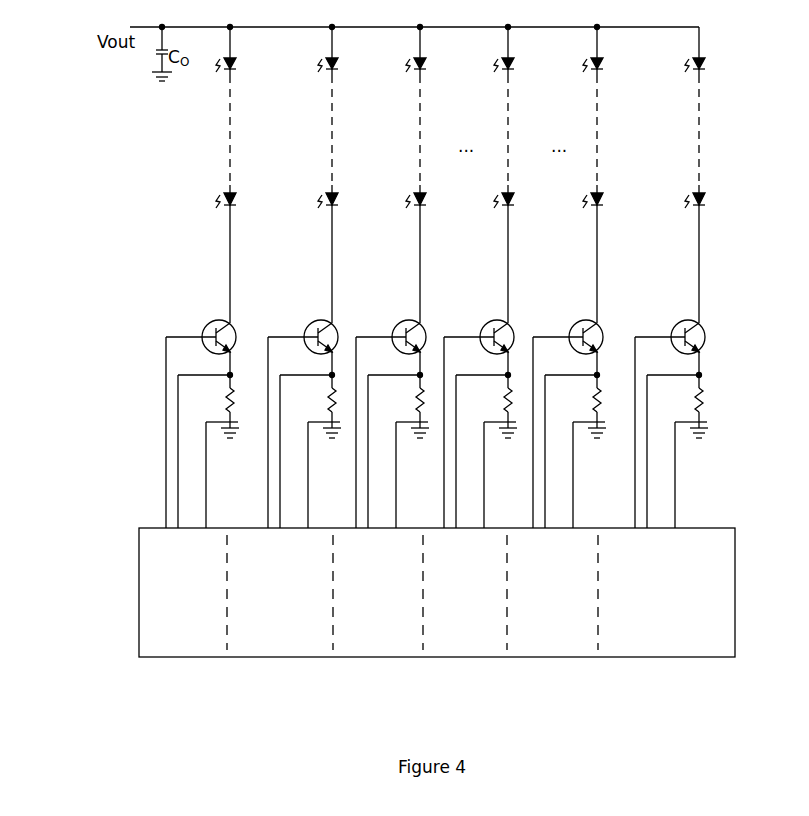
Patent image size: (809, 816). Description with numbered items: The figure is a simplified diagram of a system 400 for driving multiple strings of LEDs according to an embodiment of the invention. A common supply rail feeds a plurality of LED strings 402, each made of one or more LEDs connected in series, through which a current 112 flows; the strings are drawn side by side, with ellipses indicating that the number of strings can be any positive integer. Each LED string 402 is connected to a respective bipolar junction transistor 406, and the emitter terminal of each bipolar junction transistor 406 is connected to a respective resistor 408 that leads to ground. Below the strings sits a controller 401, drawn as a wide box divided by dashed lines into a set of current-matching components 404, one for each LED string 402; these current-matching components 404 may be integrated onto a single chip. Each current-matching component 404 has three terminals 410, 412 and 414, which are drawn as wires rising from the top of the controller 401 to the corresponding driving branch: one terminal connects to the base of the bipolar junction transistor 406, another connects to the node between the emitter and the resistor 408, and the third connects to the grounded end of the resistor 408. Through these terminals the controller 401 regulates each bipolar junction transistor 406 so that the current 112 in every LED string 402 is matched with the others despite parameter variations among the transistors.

The system 400 is at (108, 677).
The controller 401 is at (141, 656).
The current 112 is at (232, 44).
The LED string 402 is at (228, 196).
The current-matching component 404 is at (177, 657).
The bipolar junction transistor 406 is at (206, 327).
The resistor 408 is at (227, 396).
The terminal 410 is at (168, 527).
The terminal 412 is at (166, 488).
The terminal 414 is at (206, 508).